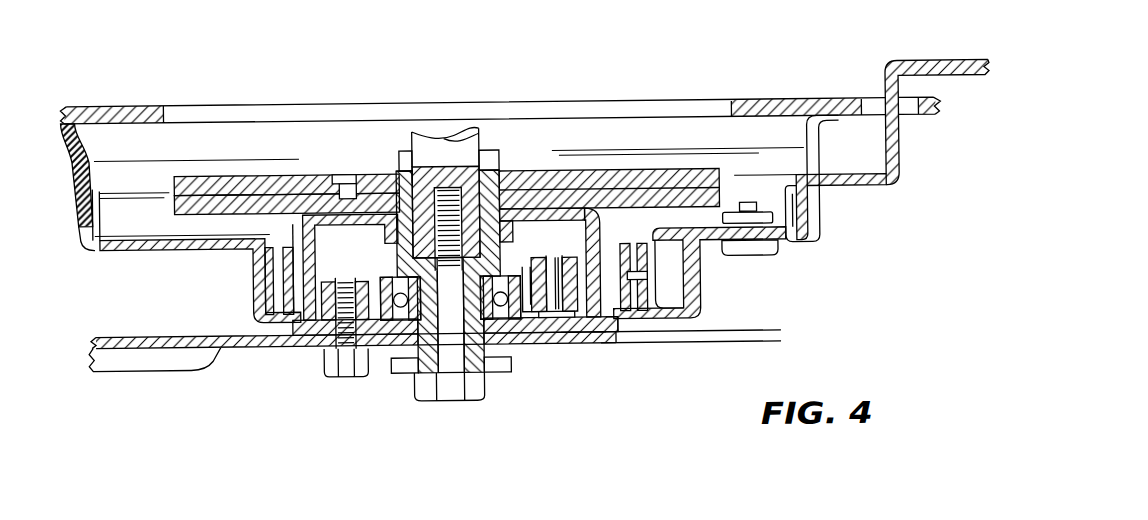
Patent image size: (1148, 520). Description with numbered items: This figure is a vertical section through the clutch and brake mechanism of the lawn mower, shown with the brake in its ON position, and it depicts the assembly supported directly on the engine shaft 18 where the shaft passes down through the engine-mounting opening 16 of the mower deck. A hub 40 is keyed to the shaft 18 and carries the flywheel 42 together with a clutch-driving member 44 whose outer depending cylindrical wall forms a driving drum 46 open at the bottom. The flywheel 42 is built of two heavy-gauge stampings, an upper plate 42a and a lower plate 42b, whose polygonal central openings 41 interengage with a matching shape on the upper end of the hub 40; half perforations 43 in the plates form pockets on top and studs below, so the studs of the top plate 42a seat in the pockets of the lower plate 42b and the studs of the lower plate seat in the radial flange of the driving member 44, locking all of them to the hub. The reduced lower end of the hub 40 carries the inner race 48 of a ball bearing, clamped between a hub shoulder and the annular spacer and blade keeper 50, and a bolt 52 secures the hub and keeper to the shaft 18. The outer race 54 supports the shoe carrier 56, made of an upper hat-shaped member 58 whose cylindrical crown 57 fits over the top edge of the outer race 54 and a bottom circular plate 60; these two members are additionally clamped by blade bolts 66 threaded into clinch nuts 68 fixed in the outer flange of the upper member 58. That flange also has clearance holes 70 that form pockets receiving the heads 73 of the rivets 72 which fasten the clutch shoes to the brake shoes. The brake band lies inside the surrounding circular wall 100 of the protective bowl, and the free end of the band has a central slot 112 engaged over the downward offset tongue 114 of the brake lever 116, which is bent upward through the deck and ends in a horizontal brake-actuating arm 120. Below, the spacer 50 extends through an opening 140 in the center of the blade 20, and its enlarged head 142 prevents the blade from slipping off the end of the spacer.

The engine-mounting opening 16 is at (173, 103).
The engine shaft 18 is at (460, 128).
The blade 20 is at (245, 345).
The hub 40 is at (487, 162).
The polygonal central openings 41 is at (397, 176).
The flywheel 42 is at (617, 172).
The top flywheel plate 42a is at (176, 181).
The lower flywheel plate 42b is at (176, 200).
The half perforations 43 is at (343, 174).
The clutch-driving member 44 is at (567, 208).
The driving drum 46 is at (583, 256).
The inner race 48 is at (505, 325).
The annular spacer and blade keeper 50 is at (474, 373).
The bolt 52 is at (455, 390).
The outer race 54 is at (500, 324).
The shoe carrier 56 is at (605, 339).
The central cylindrical crown 57 is at (385, 277).
The upper hat-shaped member 58 is at (612, 323).
The bottom circular plate 60 is at (595, 334).
The blade bolts 66 is at (365, 365).
The clinch nuts 68 is at (325, 276).
The clearance holes 70 is at (568, 334).
The rivets 72 is at (550, 265).
The rivet heads 73 is at (558, 325).
The circular wall 100 is at (253, 279).
The central slot 112 is at (640, 287).
The downward offset tongue 114 is at (647, 282).
The brake lever 116 is at (850, 191).
The brake-actuating arm 120 is at (922, 65).
The opening 140 is at (402, 372).
The enlarged head 142 is at (509, 368).